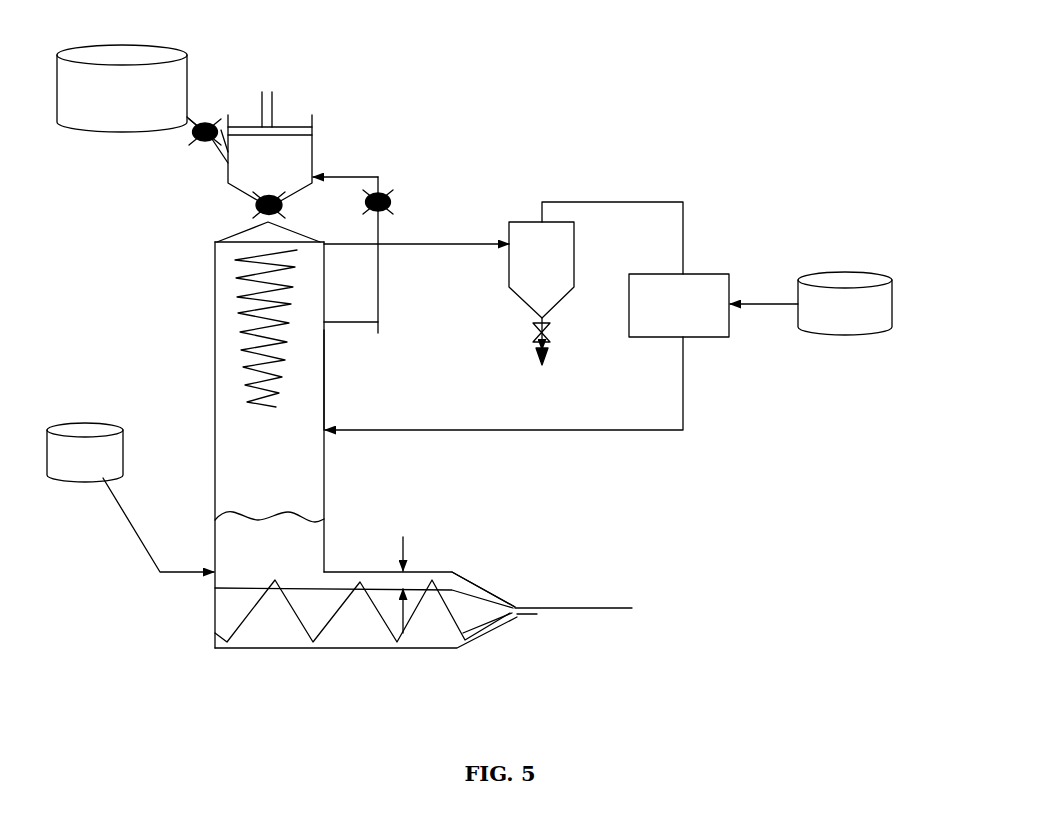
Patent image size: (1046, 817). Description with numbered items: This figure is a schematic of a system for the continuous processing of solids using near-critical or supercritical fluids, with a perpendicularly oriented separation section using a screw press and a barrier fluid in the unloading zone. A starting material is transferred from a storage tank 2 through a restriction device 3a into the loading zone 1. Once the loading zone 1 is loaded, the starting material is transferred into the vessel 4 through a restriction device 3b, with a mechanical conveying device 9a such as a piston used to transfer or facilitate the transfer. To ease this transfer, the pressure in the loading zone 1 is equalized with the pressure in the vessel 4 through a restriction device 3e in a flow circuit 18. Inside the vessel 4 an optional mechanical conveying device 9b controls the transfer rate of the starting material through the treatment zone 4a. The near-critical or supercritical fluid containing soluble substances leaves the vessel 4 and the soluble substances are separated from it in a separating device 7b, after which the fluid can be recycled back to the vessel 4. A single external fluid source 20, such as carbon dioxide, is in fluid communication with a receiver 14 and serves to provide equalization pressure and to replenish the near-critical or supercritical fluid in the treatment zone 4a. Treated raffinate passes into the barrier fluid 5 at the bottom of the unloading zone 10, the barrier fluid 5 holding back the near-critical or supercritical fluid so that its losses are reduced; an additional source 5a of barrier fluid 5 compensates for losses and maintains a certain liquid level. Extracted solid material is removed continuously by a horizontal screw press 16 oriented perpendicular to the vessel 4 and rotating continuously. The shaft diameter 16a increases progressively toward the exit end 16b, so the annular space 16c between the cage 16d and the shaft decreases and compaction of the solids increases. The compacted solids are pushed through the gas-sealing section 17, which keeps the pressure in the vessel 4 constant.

The loading zone 1 is at (322, 148).
The storage tank 2 is at (130, 71).
The restriction device 3a is at (207, 122).
The restriction device 3b is at (242, 212).
The restriction device 3e is at (379, 255).
The vessel 4 is at (203, 367).
The treatment zone 4a is at (318, 389).
The barrier fluid 5 is at (292, 555).
The additional source of barrier fluid 5a is at (121, 470).
The separating device 7b is at (573, 267).
The mechanical conveying device 9a is at (287, 115).
The mechanical conveying device 9b is at (233, 298).
The unloading zone 10 is at (203, 480).
The receiver 14 is at (679, 305).
The screw press 16 is at (347, 630).
The shaft diameter 16a is at (438, 578).
The exit end 16b is at (500, 595).
The annular space 16c is at (391, 541).
The cage 16d is at (497, 630).
The gas-sealing section 17 is at (589, 601).
The flow circuit 18 is at (378, 303).
The external fluid source 20 is at (811, 303).